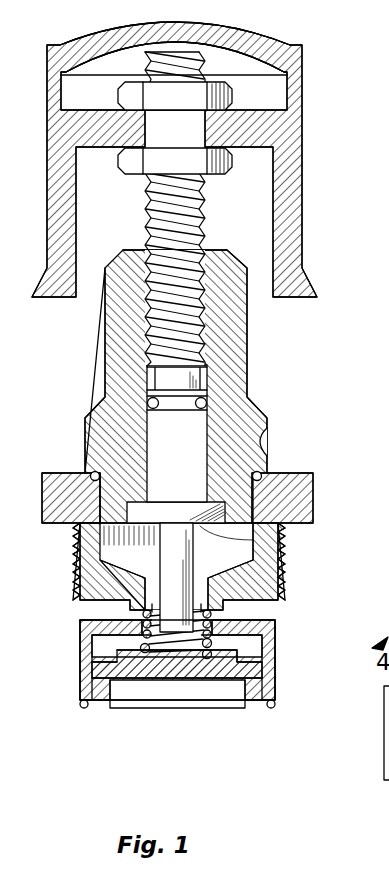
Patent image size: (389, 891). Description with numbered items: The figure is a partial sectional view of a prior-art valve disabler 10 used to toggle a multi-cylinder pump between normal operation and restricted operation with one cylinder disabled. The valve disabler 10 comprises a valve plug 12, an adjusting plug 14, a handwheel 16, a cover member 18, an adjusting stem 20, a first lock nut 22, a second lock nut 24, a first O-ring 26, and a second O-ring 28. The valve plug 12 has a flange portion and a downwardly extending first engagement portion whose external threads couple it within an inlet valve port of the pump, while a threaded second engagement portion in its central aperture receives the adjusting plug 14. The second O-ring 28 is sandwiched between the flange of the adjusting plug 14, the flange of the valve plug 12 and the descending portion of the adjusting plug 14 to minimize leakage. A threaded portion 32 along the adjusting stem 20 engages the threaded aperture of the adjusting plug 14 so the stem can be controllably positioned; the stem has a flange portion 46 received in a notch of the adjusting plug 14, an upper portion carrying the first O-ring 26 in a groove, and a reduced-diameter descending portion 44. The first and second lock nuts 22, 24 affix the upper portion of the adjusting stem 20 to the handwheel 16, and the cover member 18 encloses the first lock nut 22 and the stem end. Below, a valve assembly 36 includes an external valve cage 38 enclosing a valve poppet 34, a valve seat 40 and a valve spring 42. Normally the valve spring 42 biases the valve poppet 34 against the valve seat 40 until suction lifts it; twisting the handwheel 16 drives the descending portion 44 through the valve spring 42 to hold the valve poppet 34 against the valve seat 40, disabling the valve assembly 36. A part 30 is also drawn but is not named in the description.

The valve disabler 10 is at (132, 768).
The valve plug 12 is at (314, 507).
The adjusting plug 14 is at (248, 335).
The handwheel 16 is at (302, 213).
The cover member 18 is at (276, 29).
The adjusting stem 20 is at (146, 229).
The first lock nut 22 is at (232, 98).
The second lock nut 24 is at (236, 165).
The first O-ring 26 is at (210, 404).
The second O-ring 28 is at (268, 438).
The spring follower 30 is at (208, 377).
The threaded portion 32 is at (206, 229).
The valve poppet 34 is at (193, 680).
The valve assembly 36 is at (58, 690).
The external valve cage 38 is at (80, 633).
The valve seat 40 is at (110, 702).
The valve spring 42 is at (142, 646).
The descending portion 44 is at (128, 556).
The flange portion 46 is at (233, 528).